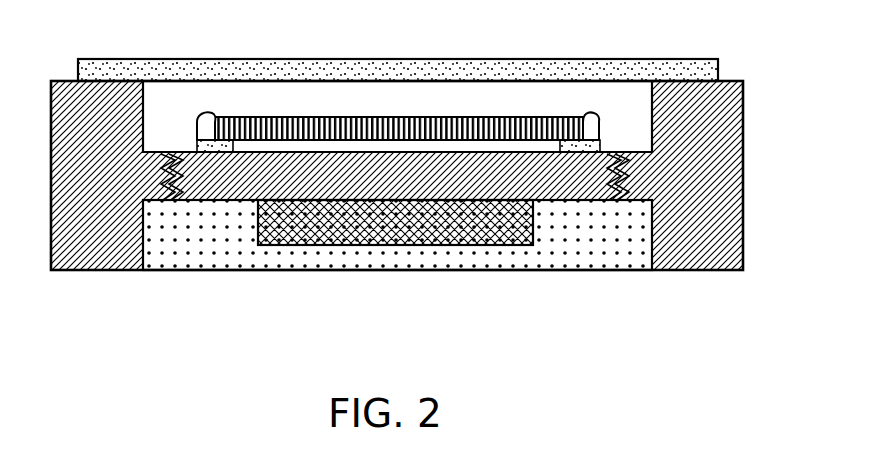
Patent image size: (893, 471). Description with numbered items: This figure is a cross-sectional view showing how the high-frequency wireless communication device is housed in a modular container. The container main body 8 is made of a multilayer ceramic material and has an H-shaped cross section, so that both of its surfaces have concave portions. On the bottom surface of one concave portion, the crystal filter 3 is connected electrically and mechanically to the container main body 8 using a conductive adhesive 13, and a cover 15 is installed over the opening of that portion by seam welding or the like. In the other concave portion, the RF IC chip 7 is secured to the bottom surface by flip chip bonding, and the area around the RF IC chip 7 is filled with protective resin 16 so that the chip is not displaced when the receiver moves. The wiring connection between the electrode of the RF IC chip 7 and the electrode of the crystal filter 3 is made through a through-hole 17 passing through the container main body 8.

The crystal filter 3 is at (450, 130).
The RF IC chip 7 is at (375, 246).
The container main body 8 is at (739, 115).
The conductive adhesive 13 is at (197, 140).
The cover 15 is at (288, 59).
The protective resin 16 is at (233, 257).
The through-hole 17 is at (155, 203).